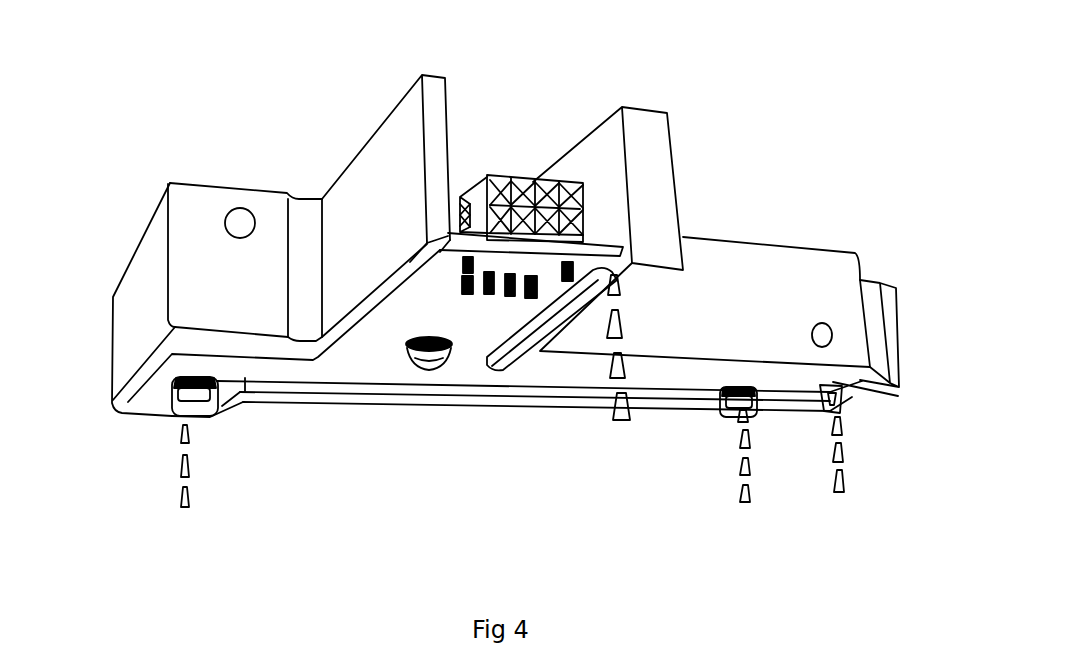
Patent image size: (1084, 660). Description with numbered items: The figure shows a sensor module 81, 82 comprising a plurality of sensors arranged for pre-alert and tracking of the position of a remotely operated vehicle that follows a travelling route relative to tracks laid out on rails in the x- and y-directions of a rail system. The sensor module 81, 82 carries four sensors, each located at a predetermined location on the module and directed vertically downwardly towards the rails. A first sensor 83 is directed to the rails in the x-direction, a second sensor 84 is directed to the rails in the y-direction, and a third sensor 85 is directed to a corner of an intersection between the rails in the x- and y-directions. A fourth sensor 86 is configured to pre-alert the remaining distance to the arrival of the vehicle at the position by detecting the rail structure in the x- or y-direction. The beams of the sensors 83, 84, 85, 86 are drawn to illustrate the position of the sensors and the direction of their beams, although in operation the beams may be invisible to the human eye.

The first sensor module 81 is at (505, 237).
The second sensor module 82 is at (772, 228).
The first sensor 83 is at (823, 390).
The second sensor 84 is at (197, 392).
The third sensor 85 is at (720, 407).
The fourth sensor 86 is at (600, 268).